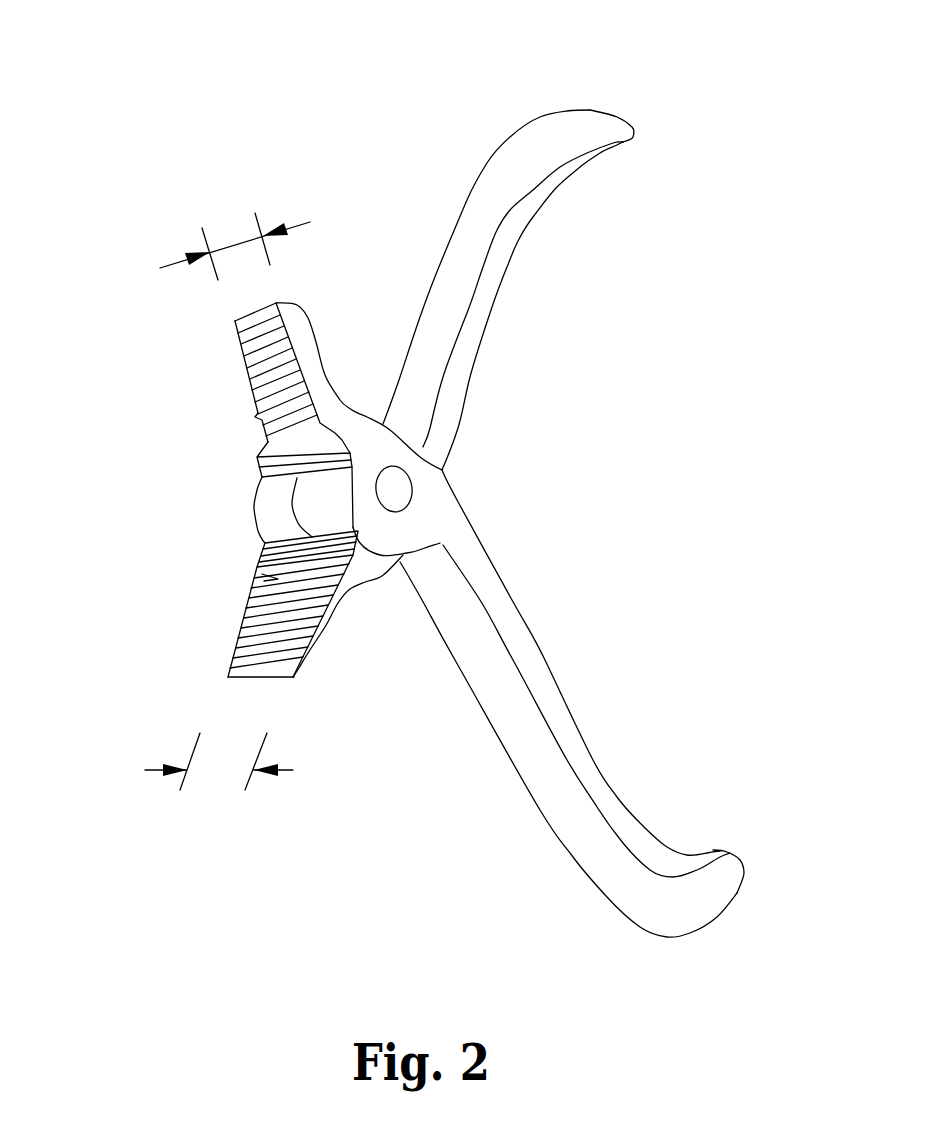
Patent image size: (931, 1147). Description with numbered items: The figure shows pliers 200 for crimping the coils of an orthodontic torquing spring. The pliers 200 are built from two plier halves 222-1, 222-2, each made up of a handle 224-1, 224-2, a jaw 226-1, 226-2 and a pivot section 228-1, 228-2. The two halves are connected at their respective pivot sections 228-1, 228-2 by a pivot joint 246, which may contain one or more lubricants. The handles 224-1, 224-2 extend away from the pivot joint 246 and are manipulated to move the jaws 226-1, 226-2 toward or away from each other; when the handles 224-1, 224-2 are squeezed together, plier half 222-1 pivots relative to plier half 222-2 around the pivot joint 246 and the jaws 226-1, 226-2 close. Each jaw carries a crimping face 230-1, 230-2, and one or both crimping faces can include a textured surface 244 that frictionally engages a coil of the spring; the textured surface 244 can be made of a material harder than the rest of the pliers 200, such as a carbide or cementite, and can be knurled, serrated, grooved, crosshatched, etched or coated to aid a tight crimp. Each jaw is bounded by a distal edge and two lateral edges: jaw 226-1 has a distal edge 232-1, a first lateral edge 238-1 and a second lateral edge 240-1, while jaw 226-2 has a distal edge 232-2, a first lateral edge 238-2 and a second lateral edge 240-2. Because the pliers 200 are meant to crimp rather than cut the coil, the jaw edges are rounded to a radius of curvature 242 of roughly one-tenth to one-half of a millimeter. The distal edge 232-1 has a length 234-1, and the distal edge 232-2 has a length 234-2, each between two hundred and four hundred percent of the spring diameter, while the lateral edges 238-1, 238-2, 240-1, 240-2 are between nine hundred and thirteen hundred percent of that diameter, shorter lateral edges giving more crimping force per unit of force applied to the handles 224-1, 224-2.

The pliers 200 is at (160, 72).
The plier half 222-1 is at (515, 66).
The plier half 222-2 is at (564, 954).
The handle 224-1 is at (595, 123).
The handle 224-2 is at (697, 912).
The jaw 226-1 is at (337, 727).
The jaw 226-2 is at (318, 260).
The pivot section 228-1 is at (212, 507).
The pivot section 228-2 is at (486, 443).
The crimping face 230-1 is at (250, 648).
The crimping face 230-2 is at (259, 414).
The distal edge 232-1 is at (230, 676).
The distal edge 232-2 is at (235, 321).
The length 234-1 is at (219, 761).
The length 234-2 is at (228, 246).
The first lateral edge 238-1 is at (249, 617).
The first lateral edge 238-2 is at (253, 388).
The second lateral edge 240-1 is at (315, 618).
The second lateral edge 240-2 is at (303, 352).
The radius of curvature 242 is at (227, 327).
The textured surface 244 is at (256, 574).
The pivot joint 246 is at (402, 488).